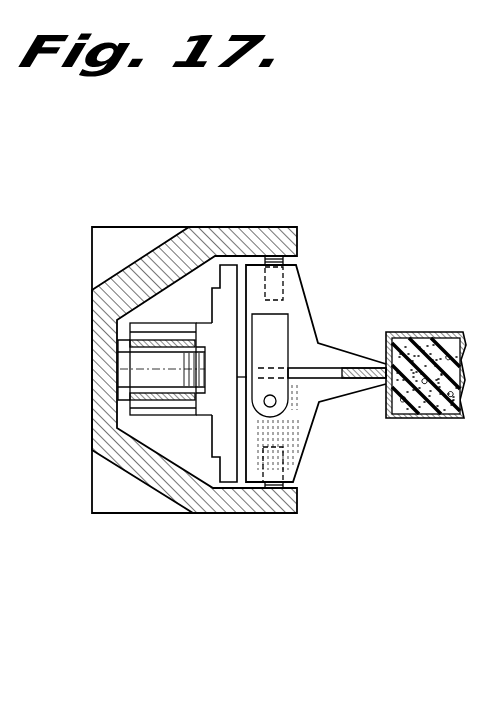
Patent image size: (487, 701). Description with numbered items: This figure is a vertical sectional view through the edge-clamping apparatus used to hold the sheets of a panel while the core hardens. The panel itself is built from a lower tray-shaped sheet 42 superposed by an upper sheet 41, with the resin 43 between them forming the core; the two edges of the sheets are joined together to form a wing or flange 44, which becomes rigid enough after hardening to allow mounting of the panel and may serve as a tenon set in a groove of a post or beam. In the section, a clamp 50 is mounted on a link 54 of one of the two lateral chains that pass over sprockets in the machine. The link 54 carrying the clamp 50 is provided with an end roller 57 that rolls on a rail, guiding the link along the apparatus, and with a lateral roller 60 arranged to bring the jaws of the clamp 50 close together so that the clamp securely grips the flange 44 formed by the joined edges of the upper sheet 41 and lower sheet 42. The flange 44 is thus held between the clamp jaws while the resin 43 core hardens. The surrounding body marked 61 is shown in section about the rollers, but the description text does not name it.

The housing 61 is at (190, 250).
The lateral roller 60 is at (275, 257).
The end roller 57 is at (135, 375).
The link 54 is at (228, 442).
The clamp 50 is at (312, 453).
The flange 44 is at (366, 367).
The upper sheet 41 is at (417, 376).
The resin 43 is at (393, 419).
The lower tray-shaped sheet 42 is at (438, 419).